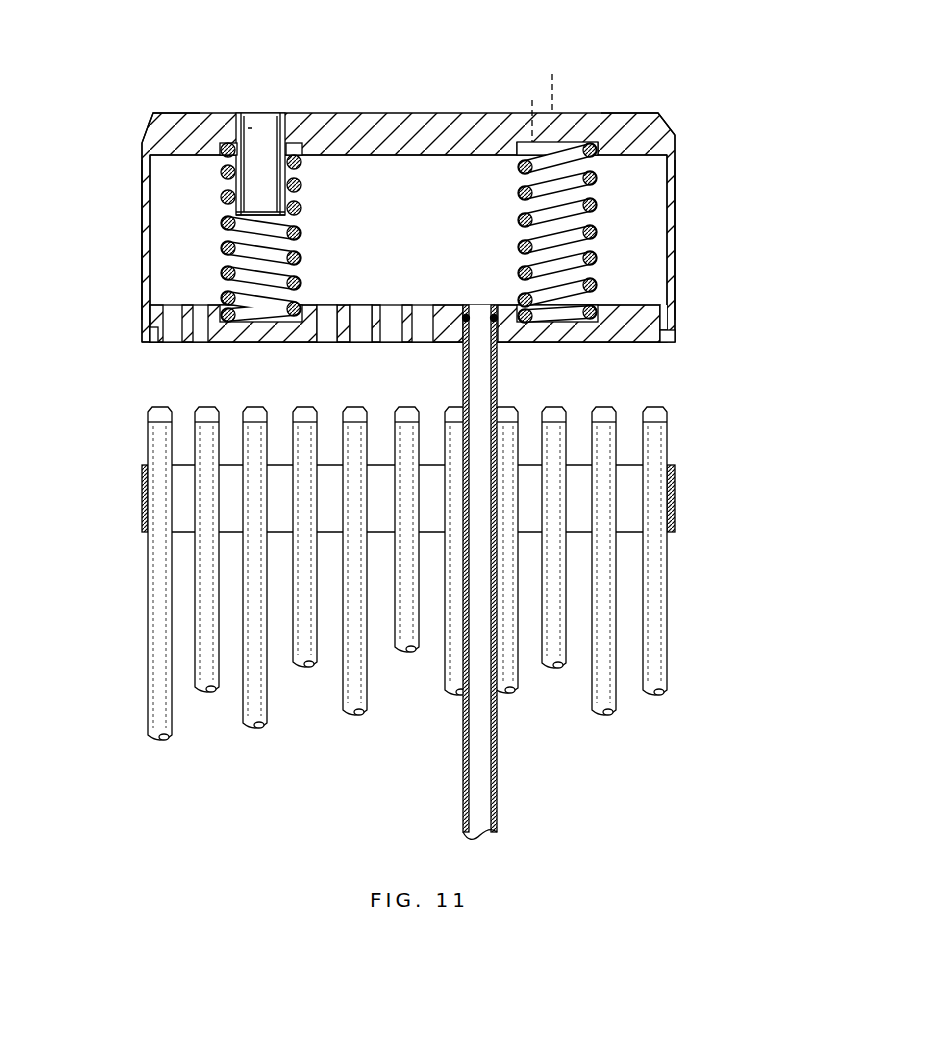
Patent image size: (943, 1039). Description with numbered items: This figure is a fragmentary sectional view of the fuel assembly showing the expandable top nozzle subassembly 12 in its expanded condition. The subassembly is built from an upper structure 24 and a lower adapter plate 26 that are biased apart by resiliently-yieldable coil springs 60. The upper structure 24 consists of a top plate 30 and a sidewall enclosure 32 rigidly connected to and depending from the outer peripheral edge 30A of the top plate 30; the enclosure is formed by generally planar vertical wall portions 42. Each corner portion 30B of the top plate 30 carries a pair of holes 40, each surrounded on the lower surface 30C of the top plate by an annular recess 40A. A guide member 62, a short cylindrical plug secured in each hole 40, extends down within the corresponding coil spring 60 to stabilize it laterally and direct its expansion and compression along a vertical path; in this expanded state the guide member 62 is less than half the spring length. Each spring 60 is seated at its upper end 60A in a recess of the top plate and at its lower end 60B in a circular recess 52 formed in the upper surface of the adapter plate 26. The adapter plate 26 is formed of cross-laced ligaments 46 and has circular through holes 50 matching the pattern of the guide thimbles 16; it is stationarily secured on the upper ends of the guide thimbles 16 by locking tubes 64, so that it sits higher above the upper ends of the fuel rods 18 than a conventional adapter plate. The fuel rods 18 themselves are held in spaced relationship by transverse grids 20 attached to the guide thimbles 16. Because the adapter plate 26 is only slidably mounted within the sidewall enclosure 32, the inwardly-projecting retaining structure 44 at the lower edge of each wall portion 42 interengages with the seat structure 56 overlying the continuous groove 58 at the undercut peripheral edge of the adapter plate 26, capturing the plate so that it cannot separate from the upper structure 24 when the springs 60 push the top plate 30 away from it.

The expandable top nozzle subassembly 12 is at (679, 88).
The control rod guide thimbles 16 is at (462, 384).
The fuel rods 18 is at (197, 640).
The transverse grids 20 is at (142, 498).
The upper structure 24 is at (677, 152).
The lower adapter plate 26 is at (289, 346).
The top plate 30 is at (346, 113).
The outer peripheral edge of the top plate 30A is at (142, 150).
The corner portions of the top plate 30B is at (200, 113).
The lower surface of the top plate 30C is at (397, 157).
The sidewall enclosure 32 is at (140, 258).
The holes 40 is at (276, 135).
The annular recess 40A is at (298, 158).
The vertical wall portions 42 is at (141, 222).
The retaining structure 44 is at (146, 349).
The cross-laced ligaments 46 is at (409, 312).
The circular through holes 50 is at (364, 323).
The circular recesses 52 is at (280, 336).
The seat structure 56 is at (678, 338).
The continuous groove 58 is at (153, 344).
The coil springs 60 is at (222, 272).
The upper ends of the coil springs 60A is at (229, 142).
The lower ends of the coil springs 60B is at (228, 326).
The guide member 62 is at (252, 128).
The locking tubes 64 is at (500, 374).